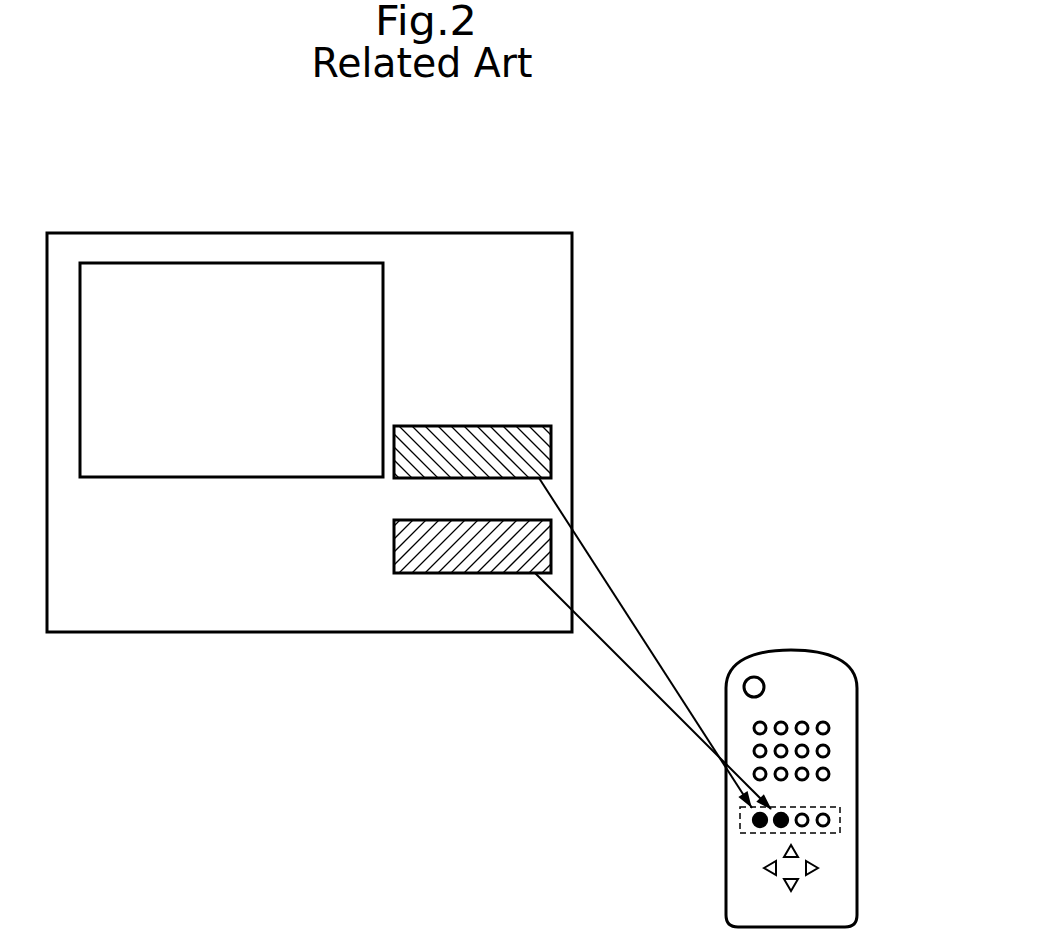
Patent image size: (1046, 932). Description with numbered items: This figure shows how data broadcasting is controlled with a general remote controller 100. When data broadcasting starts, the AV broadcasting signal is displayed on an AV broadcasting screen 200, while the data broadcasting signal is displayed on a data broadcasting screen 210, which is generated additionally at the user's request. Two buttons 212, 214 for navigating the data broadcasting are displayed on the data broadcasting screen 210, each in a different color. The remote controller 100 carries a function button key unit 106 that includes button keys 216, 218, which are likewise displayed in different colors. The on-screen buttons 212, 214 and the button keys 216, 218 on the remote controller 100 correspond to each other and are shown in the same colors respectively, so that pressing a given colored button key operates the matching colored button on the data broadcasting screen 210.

The remote controller 100 is at (802, 753).
The function button key unit 106 is at (786, 829).
The AV broadcasting screen 200 is at (233, 263).
The data broadcasting screen 210 is at (573, 308).
The button 212 is at (551, 452).
The button 214 is at (551, 549).
The button key 216 is at (750, 832).
The button key 218 is at (778, 830).